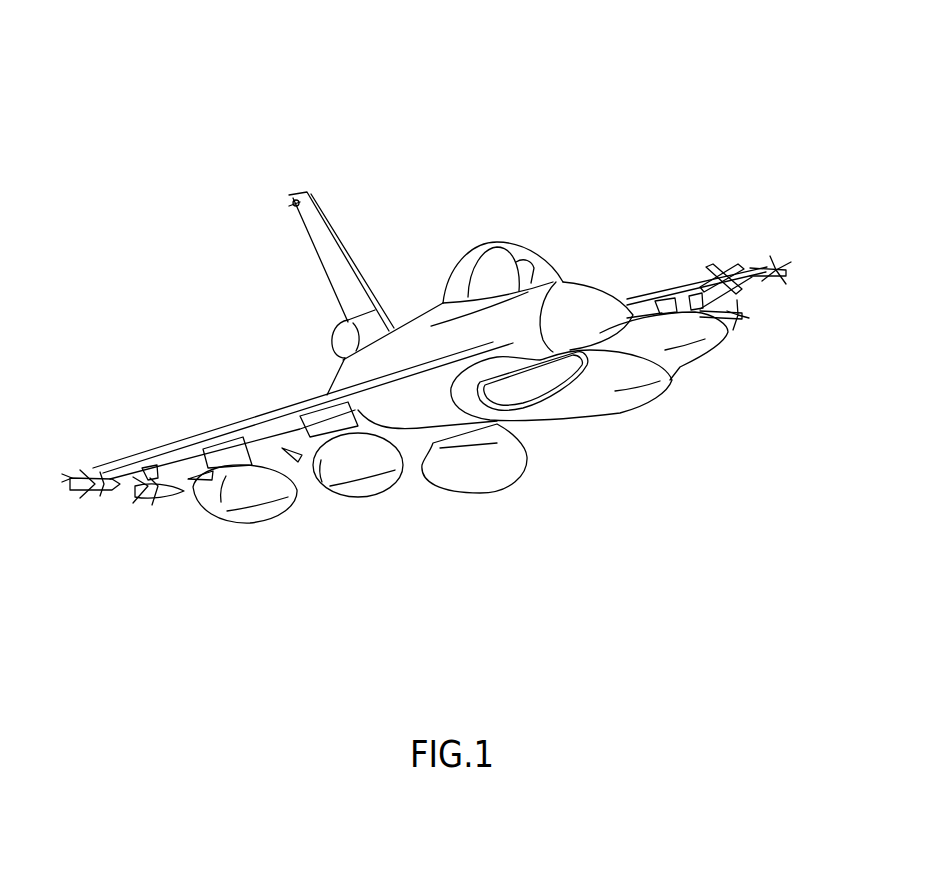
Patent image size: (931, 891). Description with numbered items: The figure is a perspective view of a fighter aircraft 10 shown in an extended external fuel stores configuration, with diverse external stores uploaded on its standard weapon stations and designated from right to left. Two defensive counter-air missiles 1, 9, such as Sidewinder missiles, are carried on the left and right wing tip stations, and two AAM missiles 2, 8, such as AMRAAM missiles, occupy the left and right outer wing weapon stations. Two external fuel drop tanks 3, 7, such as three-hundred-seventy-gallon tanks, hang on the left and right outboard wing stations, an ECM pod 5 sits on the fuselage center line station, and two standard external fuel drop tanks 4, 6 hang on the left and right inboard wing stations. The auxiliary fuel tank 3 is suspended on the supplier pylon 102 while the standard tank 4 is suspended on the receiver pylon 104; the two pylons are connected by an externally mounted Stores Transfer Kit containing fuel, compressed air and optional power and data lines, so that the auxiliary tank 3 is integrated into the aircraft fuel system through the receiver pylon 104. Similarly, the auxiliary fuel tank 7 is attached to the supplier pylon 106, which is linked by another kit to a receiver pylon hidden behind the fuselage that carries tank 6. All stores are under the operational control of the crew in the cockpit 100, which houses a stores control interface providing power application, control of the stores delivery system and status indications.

The aircraft 10 is at (683, 71).
The cockpit 100 is at (530, 246).
The supplier pylon 102 is at (226, 453).
The receiver pylon 104 is at (317, 423).
The supplier pylon 106 is at (679, 298).
The defensive counter-air missile 1 is at (90, 498).
The AAM missile 2 is at (163, 497).
The external fuel drop tank 3 is at (270, 518).
The external fuel drop tank 4 is at (365, 488).
The ECM pod 5 is at (480, 479).
The external fuel drop tank 6 is at (641, 400).
The external fuel drop tank 7 is at (694, 356).
The AAM missile 8 is at (733, 324).
The defensive counter-air missile 9 is at (768, 284).